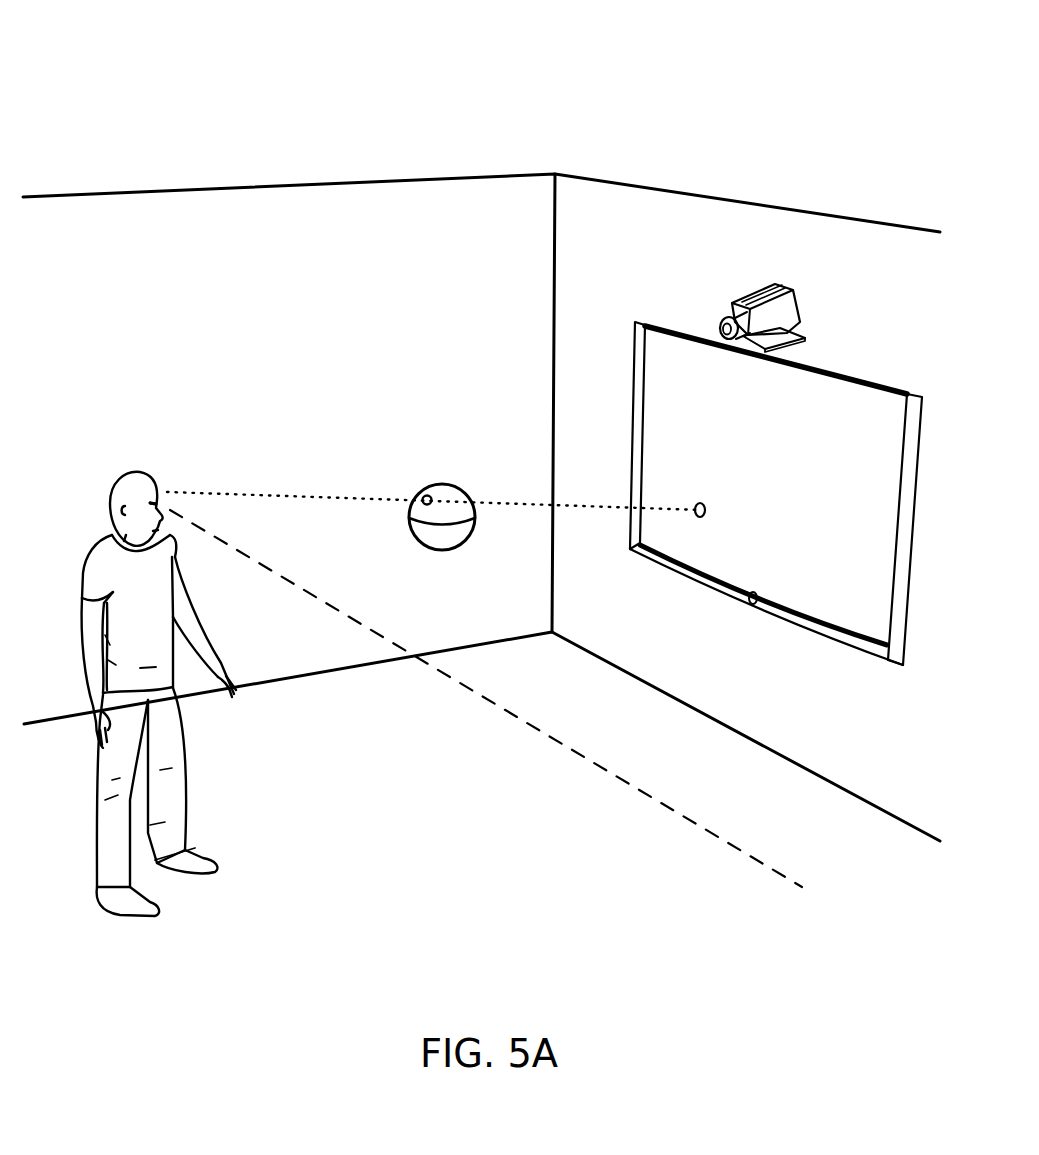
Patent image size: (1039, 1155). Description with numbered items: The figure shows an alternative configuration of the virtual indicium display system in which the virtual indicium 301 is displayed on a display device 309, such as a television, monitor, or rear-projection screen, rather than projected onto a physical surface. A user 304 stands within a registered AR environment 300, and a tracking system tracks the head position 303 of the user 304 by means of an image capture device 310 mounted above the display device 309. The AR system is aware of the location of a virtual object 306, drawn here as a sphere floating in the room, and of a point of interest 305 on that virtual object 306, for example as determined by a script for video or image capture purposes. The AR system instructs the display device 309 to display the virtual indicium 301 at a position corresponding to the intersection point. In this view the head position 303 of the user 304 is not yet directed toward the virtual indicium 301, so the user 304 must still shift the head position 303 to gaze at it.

The registered AR environment 300 is at (208, 90).
The virtual indicium 301 is at (704, 505).
The head position 303 is at (140, 471).
The user 304 is at (216, 766).
The point of interest 305 is at (428, 495).
The virtual object 306 is at (460, 568).
The display device 309 is at (800, 630).
The image capture device 310 is at (732, 277).